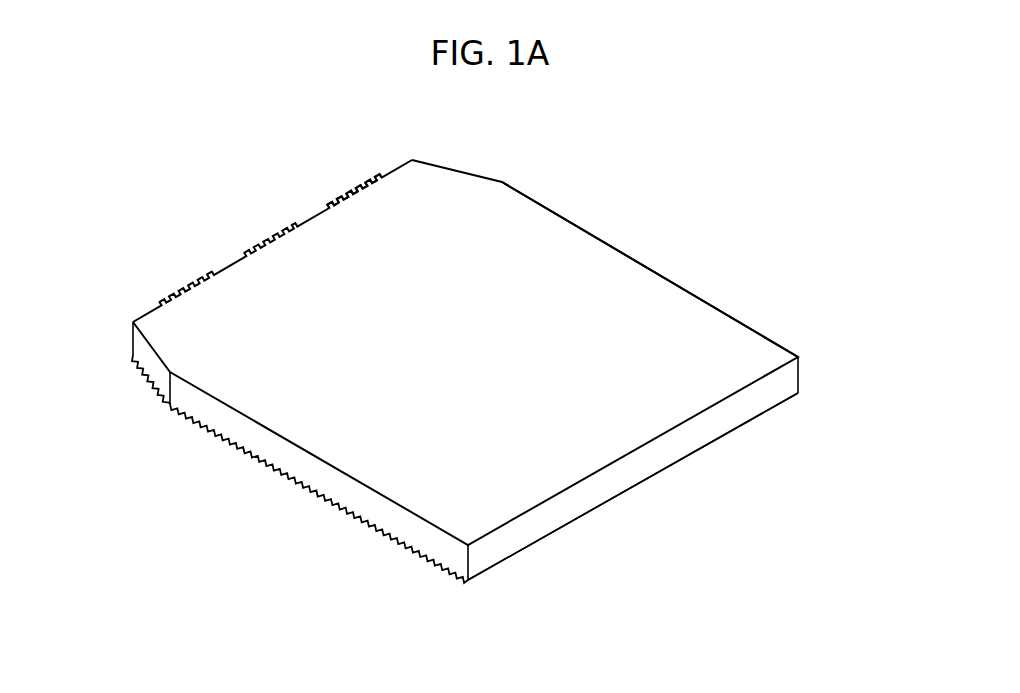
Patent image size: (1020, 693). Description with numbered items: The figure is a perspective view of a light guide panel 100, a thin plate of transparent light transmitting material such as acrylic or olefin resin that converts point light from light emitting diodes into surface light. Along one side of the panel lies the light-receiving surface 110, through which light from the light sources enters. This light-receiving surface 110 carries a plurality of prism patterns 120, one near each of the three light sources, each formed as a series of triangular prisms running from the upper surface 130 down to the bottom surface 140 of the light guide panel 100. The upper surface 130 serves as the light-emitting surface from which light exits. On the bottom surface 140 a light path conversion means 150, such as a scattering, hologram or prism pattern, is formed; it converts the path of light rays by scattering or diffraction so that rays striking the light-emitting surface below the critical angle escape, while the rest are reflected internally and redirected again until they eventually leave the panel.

The light guide panel 100 is at (706, 231).
The light-receiving surface 110 is at (318, 218).
The prism patterns 120 is at (367, 187).
The upper surface 130 is at (543, 237).
The bottom surface 140 is at (733, 430).
The light path conversion means 150 is at (203, 428).